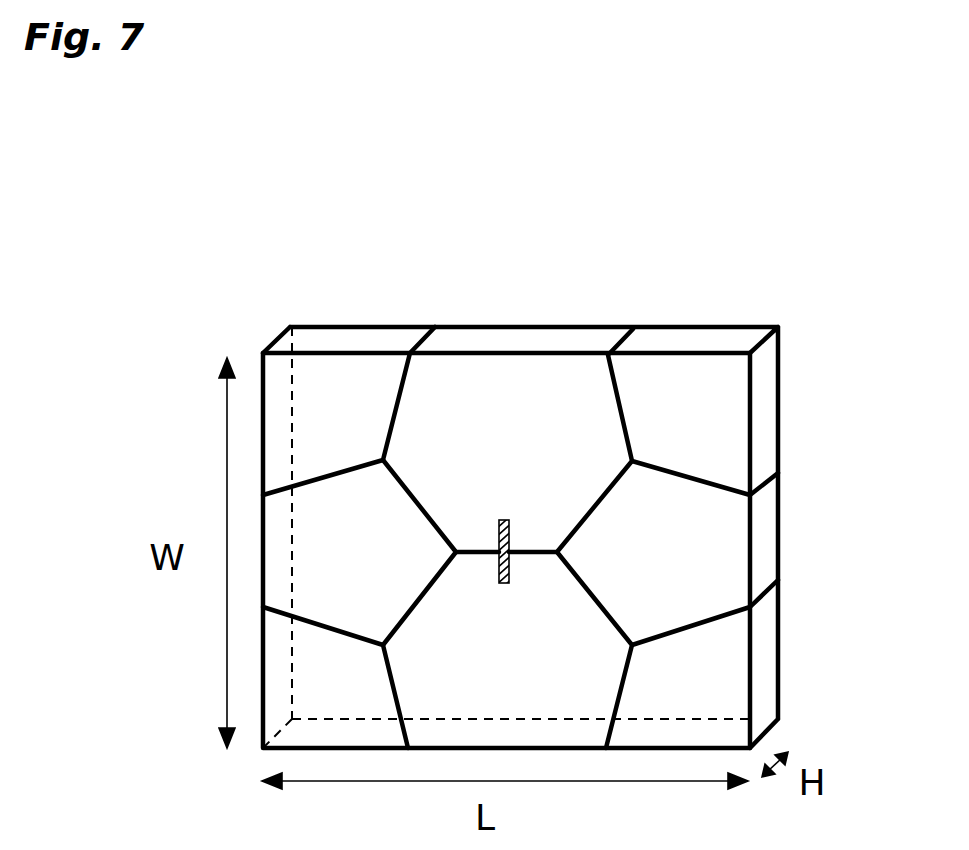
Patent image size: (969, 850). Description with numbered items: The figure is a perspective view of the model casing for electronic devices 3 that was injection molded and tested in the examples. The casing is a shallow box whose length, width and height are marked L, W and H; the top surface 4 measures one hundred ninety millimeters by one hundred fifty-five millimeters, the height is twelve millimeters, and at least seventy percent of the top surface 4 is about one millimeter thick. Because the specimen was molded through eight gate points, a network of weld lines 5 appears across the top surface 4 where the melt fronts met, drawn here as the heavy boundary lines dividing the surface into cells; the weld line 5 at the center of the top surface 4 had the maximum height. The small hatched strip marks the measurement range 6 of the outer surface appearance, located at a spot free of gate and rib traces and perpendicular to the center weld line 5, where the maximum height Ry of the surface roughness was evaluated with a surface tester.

The model casing for electronic devices 3 is at (512, 307).
The top surface 4 is at (694, 404).
The weld line 5 is at (728, 488).
The measurement range of outer surface appearance 6 is at (500, 528).